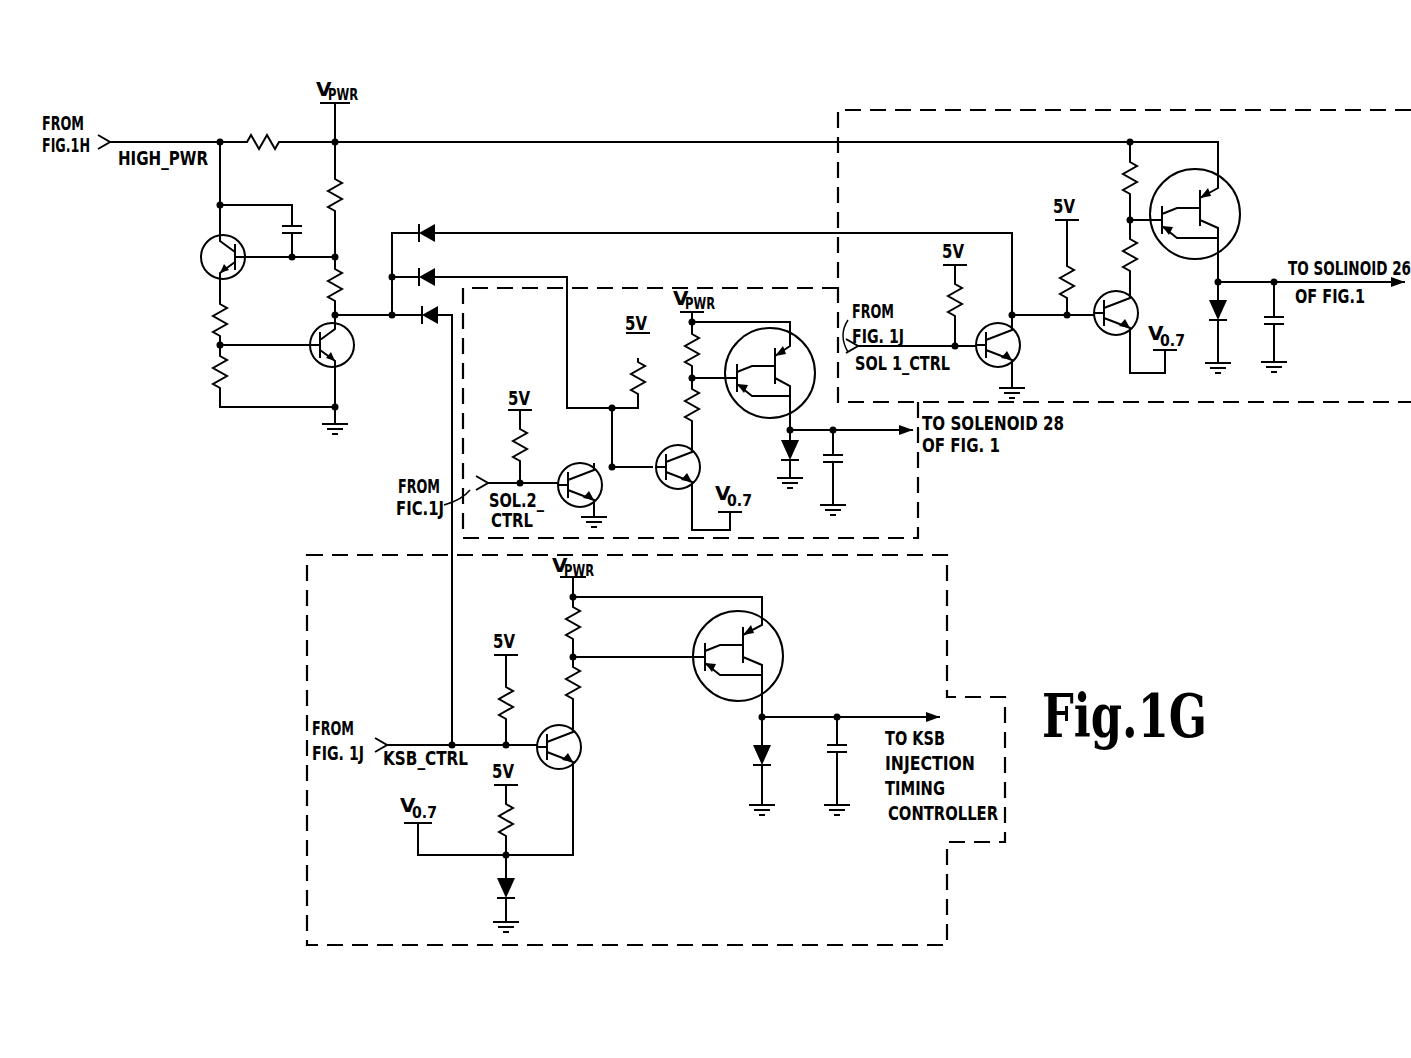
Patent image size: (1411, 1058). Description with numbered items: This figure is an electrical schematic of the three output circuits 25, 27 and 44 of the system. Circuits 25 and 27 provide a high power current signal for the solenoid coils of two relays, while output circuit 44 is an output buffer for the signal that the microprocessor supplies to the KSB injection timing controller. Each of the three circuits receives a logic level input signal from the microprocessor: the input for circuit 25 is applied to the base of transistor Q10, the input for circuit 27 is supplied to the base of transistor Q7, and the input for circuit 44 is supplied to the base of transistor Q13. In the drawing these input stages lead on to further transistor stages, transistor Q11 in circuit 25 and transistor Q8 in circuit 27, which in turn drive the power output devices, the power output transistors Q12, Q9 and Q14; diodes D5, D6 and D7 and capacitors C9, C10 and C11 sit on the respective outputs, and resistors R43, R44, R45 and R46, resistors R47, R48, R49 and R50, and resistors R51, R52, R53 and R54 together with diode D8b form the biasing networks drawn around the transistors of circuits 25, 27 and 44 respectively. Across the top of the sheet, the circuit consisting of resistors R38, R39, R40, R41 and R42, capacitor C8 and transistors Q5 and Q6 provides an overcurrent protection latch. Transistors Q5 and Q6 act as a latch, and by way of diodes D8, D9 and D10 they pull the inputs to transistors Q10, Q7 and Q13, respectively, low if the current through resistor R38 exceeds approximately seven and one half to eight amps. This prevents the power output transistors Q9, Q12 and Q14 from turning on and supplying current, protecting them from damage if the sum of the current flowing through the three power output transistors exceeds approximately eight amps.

The output circuit 25 is at (1297, 402).
The output circuit 27 is at (918, 507).
The output circuit 44 is at (948, 645).
The resistor R38 is at (263, 127).
The resistor R39 is at (228, 310).
The resistor R40 is at (228, 370).
The resistor R41 is at (343, 200).
The resistor R42 is at (343, 287).
The resistor R43 is at (962, 317).
The resistor R44 is at (1074, 285).
The resistor R45 is at (1137, 185).
The resistor R46 is at (1137, 266).
The resistor R47 is at (528, 445).
The resistor R48 is at (636, 375).
The resistor R49 is at (677, 350).
The resistor R50 is at (699, 420).
The resistor R51 is at (513, 695).
The resistor R52 is at (580, 630).
The resistor R53 is at (580, 694).
The resistor R54 is at (513, 832).
The capacitor C8 is at (280, 226).
The capacitor C9 is at (1264, 320).
The capacitor C10 is at (844, 476).
The capacitor C11 is at (851, 742).
The transistor Q5 is at (240, 274).
The transistor Q6 is at (350, 362).
The transistor Q7 is at (600, 494).
The transistor Q8 is at (698, 468).
The power output transistor Q9 is at (803, 342).
The transistor Q10 is at (1020, 358).
The transistor Q11 is at (1116, 335).
The power output transistor Q12 is at (1228, 180).
The transistor Q13 is at (581, 749).
The power output transistor Q14 is at (780, 648).
The diode D5 is at (1210, 308).
The diode D6 is at (781, 452).
The diode D7 is at (752, 752).
The diode D8 is at (432, 222).
The diode D8 D8b is at (516, 888).
The diode D9 is at (432, 266).
The diode D10 is at (436, 325).